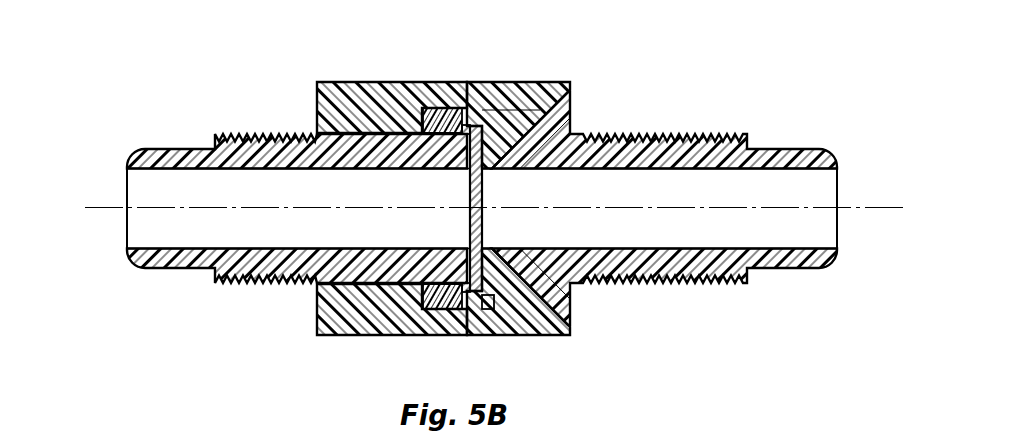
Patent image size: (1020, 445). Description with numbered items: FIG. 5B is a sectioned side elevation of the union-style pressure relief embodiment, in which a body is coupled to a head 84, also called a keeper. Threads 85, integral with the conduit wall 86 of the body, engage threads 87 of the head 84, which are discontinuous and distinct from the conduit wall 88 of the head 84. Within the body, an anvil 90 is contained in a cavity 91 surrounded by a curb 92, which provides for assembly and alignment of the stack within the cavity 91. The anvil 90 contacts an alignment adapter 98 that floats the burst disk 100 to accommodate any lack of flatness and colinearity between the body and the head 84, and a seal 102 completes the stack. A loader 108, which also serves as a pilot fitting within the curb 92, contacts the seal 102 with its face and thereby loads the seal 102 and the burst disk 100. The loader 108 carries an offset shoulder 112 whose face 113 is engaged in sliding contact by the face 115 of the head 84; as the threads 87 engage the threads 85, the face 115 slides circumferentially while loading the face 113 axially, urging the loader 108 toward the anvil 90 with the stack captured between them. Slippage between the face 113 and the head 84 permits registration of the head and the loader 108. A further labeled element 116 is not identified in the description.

The head 84 is at (330, 320).
The threads 85 is at (572, 120).
The conduit wall 86 is at (770, 258).
The threads 87 is at (560, 90).
The conduit wall 88 is at (172, 262).
The anvil 90 is at (572, 283).
The cavity 91 is at (493, 82).
The curb 92 is at (487, 313).
The alignment adapter 98 is at (573, 133).
The burst disk 100 is at (480, 128).
The seal 102 is at (475, 311).
The loader 108 is at (463, 125).
The shoulder 112 is at (428, 106).
The face 113 is at (440, 308).
The face 115 is at (408, 302).
The bore 116 is at (172, 197).